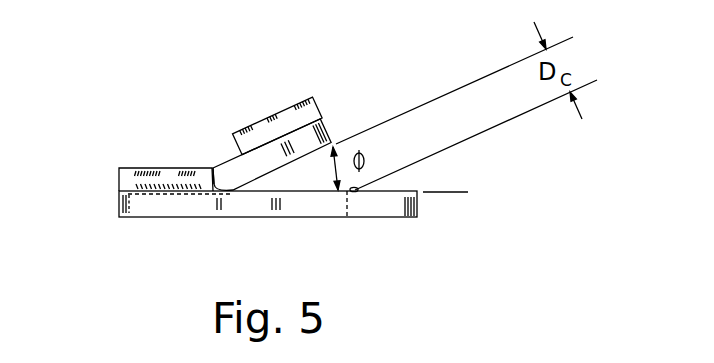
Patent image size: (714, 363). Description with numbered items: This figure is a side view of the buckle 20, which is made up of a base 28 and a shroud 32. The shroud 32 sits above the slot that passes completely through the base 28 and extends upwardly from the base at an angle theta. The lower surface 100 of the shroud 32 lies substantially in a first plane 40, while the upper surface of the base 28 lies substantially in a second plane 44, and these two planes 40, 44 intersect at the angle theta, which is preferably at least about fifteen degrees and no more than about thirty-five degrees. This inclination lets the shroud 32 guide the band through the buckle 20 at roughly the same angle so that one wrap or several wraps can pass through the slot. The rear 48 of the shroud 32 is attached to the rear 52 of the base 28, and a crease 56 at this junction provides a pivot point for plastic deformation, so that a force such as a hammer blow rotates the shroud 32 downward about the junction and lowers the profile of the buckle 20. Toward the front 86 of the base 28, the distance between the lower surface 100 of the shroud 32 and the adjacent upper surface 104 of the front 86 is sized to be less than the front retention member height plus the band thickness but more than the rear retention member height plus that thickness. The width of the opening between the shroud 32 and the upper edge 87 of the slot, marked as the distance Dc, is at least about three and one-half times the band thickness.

The buckle 20 is at (488, 209).
The base 28 is at (343, 218).
The shroud 32 is at (335, 132).
The first plane 40 is at (383, 125).
The second plane 44 is at (442, 192).
The rear of the shroud 48 is at (216, 158).
The rear of the base 52 is at (143, 167).
The crease 56 is at (213, 168).
The front of the base 86 is at (402, 210).
The upper edge of the slot 87 is at (360, 193).
The lower surface of the shroud 100 is at (289, 150).
The upper surface of the front of the base 104 is at (263, 192).